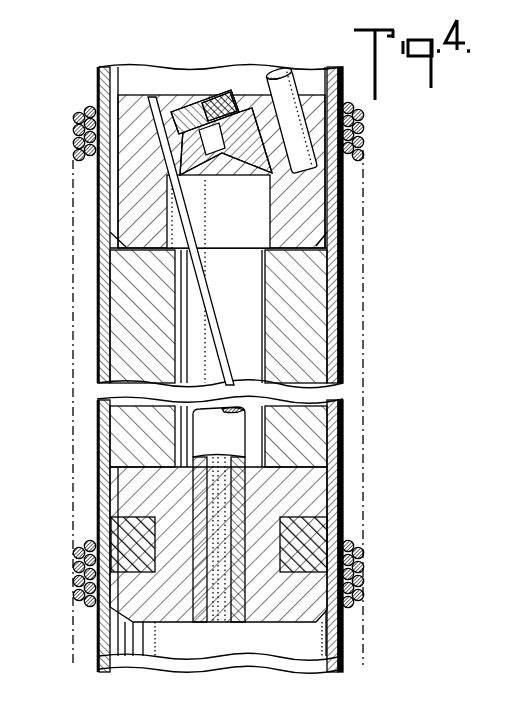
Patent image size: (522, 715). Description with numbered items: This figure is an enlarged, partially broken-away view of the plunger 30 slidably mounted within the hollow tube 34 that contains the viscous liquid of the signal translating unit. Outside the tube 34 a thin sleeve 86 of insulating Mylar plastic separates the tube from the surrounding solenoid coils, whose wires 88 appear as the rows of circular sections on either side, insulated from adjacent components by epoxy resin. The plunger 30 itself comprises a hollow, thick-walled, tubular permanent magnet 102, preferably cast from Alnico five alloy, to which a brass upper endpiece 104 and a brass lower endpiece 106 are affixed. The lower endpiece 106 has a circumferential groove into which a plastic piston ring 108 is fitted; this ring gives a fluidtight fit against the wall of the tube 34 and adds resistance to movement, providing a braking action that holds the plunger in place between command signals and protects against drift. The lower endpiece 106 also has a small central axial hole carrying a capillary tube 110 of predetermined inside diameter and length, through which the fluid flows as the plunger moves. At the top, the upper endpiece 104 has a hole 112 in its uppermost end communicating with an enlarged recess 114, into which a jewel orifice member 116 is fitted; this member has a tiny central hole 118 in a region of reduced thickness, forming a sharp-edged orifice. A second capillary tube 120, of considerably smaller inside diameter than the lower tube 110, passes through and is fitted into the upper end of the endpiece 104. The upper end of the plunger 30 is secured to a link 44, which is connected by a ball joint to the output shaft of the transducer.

The plunger 30 is at (340, 187).
The hollow tube 34 is at (106, 66).
The link 44 is at (287, 72).
The thin sleeve 86 is at (345, 246).
The wires of the coils 88 is at (80, 122).
The permanent magnet 102 is at (320, 322).
The upper endpiece 104 is at (120, 190).
The lower endpiece 106 is at (300, 600).
The piston ring 108 is at (320, 550).
The capillary tube 110 is at (205, 622).
The hole 112 is at (240, 158).
The enlarged recess 114 is at (176, 98).
The jewel orifice member 116 is at (222, 103).
The hole 118 is at (205, 100).
The second capillary tube 120 is at (198, 233).